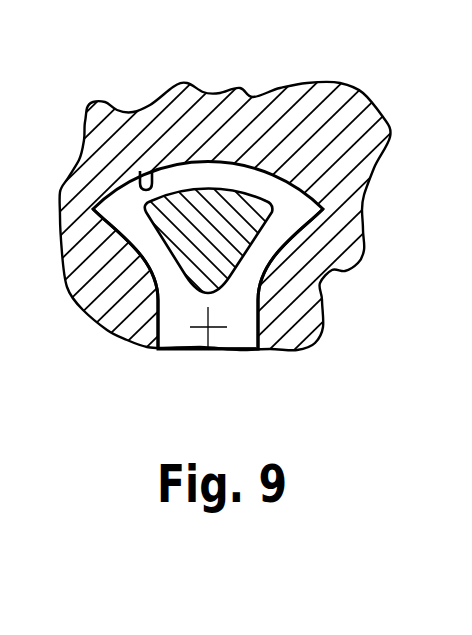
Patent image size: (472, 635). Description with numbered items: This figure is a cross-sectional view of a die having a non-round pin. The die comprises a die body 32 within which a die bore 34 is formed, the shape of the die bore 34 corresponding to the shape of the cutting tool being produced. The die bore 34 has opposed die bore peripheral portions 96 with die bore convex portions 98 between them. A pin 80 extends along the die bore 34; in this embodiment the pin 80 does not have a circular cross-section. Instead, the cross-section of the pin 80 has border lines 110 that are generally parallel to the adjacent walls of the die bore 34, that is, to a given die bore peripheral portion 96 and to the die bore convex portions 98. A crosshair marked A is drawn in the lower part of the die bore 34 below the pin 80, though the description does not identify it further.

The die body 32 is at (322, 265).
The pin 80 is at (206, 196).
The die bore peripheral portion 96 is at (150, 178).
The die bore convex portion 98 is at (124, 182).
The border lines 110 is at (185, 185).
The die bore 34 is at (177, 326).
The axis A is at (212, 331).